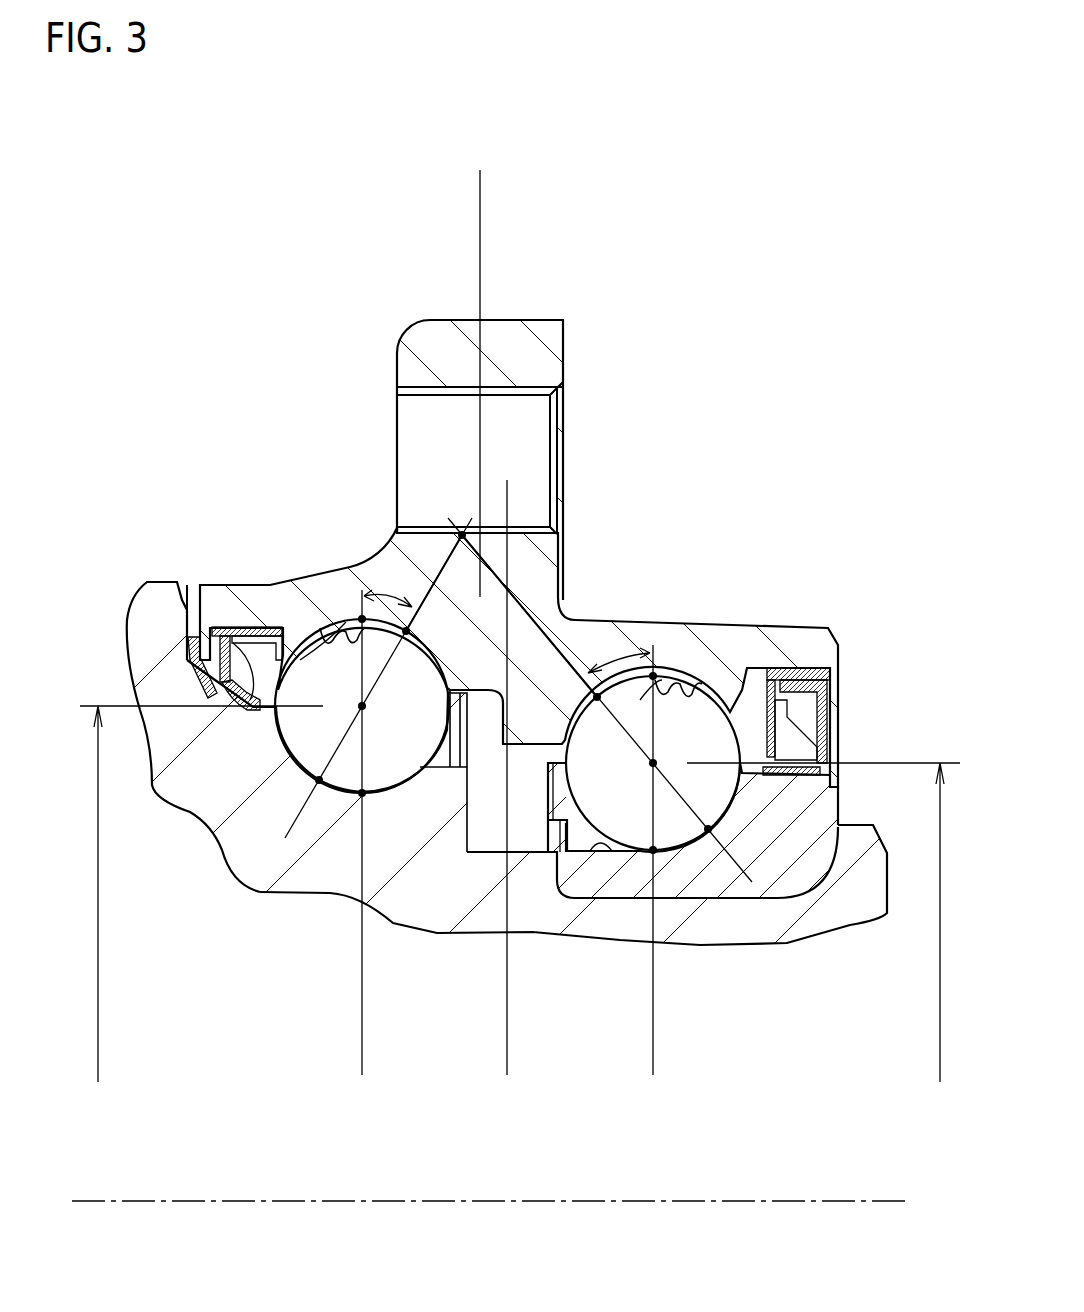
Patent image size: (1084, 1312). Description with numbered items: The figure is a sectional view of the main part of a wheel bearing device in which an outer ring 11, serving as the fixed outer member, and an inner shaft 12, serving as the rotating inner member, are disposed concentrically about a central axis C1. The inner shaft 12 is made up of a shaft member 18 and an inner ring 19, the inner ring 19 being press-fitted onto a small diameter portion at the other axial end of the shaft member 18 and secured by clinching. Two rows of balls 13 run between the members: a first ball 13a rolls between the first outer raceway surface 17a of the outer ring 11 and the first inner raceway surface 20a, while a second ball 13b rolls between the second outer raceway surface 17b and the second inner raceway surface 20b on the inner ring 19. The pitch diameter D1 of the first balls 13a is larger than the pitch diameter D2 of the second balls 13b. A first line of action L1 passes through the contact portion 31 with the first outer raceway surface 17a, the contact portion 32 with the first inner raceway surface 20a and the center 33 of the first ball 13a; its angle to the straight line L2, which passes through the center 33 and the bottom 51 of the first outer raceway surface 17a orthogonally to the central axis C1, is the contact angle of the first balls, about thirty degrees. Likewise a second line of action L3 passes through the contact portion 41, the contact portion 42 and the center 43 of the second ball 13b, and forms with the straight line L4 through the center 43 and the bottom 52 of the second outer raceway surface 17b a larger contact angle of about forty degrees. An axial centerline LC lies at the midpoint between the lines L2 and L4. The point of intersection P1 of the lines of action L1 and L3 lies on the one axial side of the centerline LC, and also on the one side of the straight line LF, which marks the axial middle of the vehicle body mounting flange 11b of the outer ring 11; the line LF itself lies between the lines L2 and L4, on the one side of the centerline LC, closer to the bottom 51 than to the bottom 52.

The outer ring 11 is at (752, 640).
The vehicle body mounting flange 11b is at (523, 340).
The inner shaft 12 is at (849, 962).
The ball 13 is at (509, 643).
The first ball 13a is at (272, 648).
The second ball 13b is at (797, 667).
The first outer raceway surface 17a is at (325, 628).
The second outer raceway surface 17b is at (683, 690).
The shaft member 18 is at (238, 848).
The inner ring 19 is at (800, 800).
The first inner raceway surface 20a is at (284, 752).
The second inner raceway surface 20b is at (722, 800).
The contact portion 31 is at (408, 631).
The contact portion 32 is at (321, 785).
The center of the first ball 33 is at (365, 707).
The contact portion 41 is at (596, 698).
The contact portion 42 is at (707, 834).
The center of the second ball 43 is at (651, 763).
The bottom of the first outer raceway surface 51 is at (346, 620).
The bottom of the second outer raceway surface 52 is at (662, 680).
The point of intersection P1 is at (462, 535).
The straight line indicating the axial middle of the vehicle body mounting flange LF is at (481, 190).
The axial centerline LC is at (507, 1058).
The first line of action L1 is at (300, 822).
The straight line L2 is at (362, 1058).
The second line of action L3 is at (737, 865).
The straight line L4 is at (653, 1058).
The pitch diameter D1 is at (190, 894).
The pitch diameter D2 is at (823, 922).
The central axis C1 is at (193, 1200).